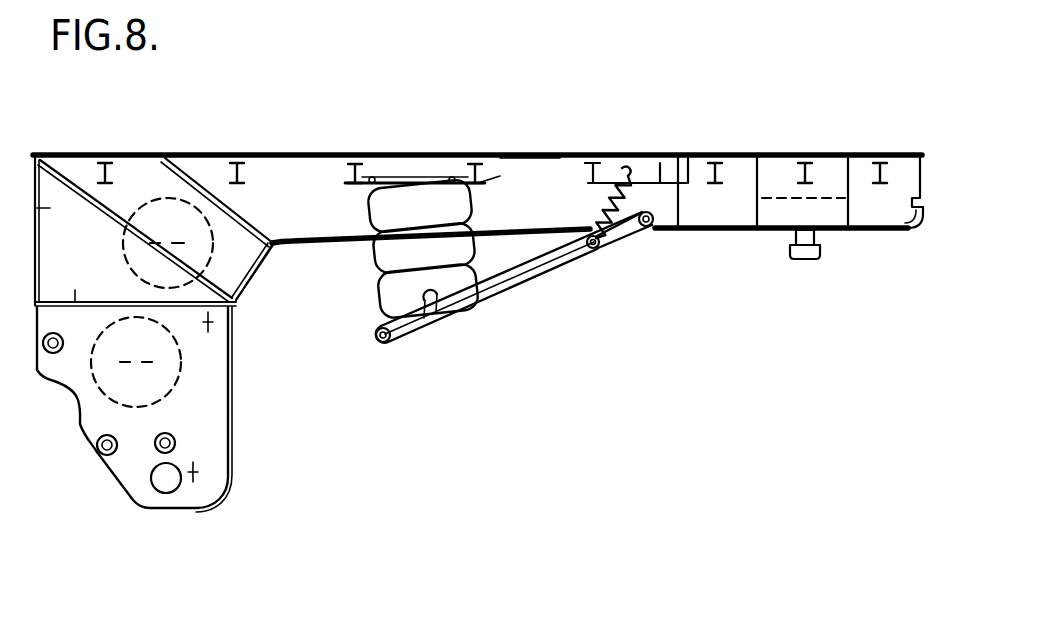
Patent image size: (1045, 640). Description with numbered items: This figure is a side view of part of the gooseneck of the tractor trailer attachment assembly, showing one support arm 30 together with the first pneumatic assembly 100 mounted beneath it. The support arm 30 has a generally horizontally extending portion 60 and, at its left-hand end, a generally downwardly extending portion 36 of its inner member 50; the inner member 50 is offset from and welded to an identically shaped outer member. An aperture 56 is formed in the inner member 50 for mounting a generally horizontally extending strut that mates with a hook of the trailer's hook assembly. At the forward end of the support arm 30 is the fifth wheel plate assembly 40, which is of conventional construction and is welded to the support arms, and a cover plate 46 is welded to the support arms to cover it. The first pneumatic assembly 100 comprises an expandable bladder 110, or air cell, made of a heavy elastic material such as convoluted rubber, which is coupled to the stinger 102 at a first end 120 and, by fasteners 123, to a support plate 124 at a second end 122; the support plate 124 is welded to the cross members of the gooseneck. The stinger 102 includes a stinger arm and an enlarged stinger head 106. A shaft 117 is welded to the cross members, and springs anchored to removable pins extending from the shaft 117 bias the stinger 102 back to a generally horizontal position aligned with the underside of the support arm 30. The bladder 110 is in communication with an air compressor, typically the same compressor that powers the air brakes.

The support arm 30 is at (263, 180).
The generally downwardly extending portion 36 is at (216, 430).
The fifth wheel plate assembly 40 is at (818, 246).
The cover plate 46 is at (528, 150).
The inner member 50 is at (309, 219).
The aperture 56 is at (165, 493).
The generally horizontally extending portion 60 is at (582, 148).
The first pneumatic assembly 100 is at (466, 328).
The stinger 102 is at (547, 273).
The enlarged stinger head 106 is at (428, 302).
The expandable bladder 110 is at (378, 288).
The shaft 117 is at (668, 178).
The first end 120 is at (375, 338).
The second end 122 is at (430, 182).
The fastener 123 is at (472, 184).
The support plate 124 is at (377, 182).